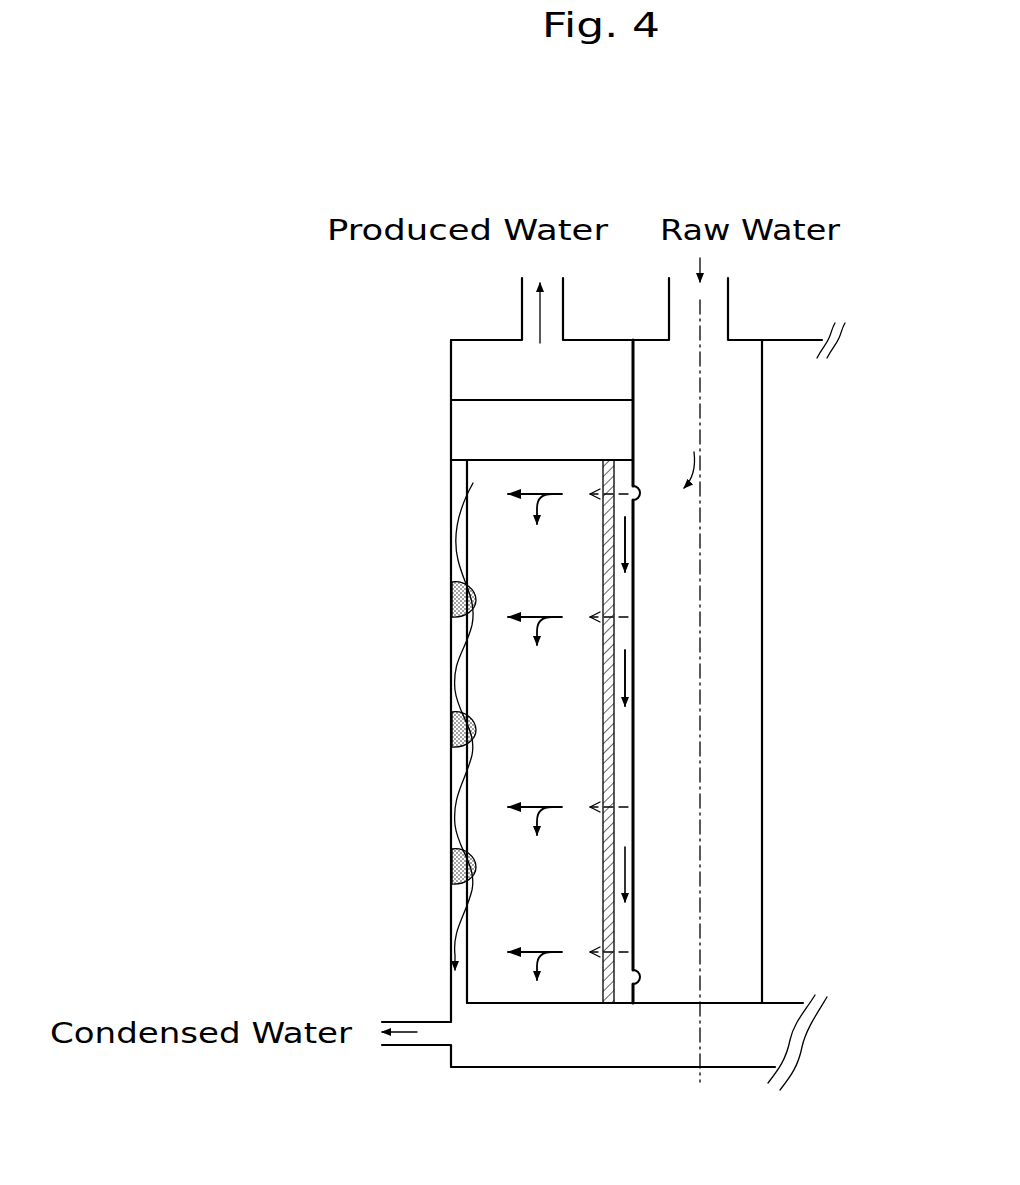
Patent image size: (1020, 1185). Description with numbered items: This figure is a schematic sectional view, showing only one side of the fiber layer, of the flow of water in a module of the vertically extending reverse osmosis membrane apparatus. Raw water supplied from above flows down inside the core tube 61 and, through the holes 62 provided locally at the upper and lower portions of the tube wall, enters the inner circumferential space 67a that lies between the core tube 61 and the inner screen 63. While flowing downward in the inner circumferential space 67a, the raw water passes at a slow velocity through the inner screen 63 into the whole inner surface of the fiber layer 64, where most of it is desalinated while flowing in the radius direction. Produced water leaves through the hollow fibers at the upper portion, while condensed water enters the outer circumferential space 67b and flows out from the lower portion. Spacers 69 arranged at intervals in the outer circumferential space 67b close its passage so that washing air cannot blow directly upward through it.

The core tube 61 is at (724, 702).
The holes 62 is at (650, 489).
The inner screen 63 is at (619, 607).
The fiber layer 64 is at (524, 571).
The inner circumferential space 67a is at (632, 827).
The outer circumferential space 67b is at (454, 647).
The spacers 69 is at (457, 712).